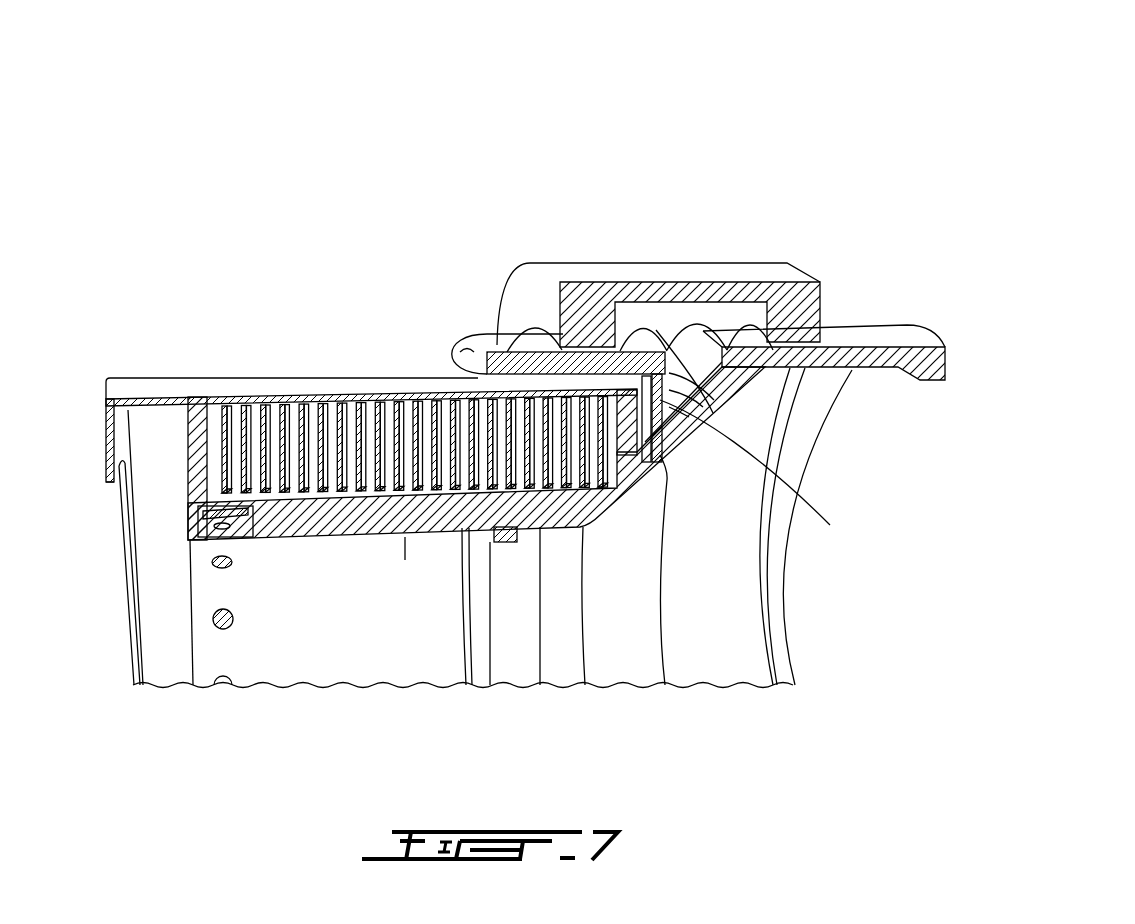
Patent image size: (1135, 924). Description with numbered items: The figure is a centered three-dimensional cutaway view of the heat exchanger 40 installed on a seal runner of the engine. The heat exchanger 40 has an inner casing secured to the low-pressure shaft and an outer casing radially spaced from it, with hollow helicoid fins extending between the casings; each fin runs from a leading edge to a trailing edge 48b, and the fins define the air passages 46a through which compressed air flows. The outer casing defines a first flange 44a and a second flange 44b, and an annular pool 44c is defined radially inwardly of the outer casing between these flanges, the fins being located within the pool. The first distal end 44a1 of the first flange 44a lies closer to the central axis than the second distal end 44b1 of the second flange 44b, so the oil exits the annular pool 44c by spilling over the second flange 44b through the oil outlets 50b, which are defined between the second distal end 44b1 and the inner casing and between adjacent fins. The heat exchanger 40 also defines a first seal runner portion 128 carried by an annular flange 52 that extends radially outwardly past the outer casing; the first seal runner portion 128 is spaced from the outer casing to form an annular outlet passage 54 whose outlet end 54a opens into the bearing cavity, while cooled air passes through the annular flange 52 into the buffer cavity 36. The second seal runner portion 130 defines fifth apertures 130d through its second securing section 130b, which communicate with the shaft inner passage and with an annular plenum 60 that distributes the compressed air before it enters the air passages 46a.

The heat exchanger 40 is at (611, 178).
The first seal runner portion 128 is at (505, 347).
The outlet end 54a is at (465, 348).
The annular outlet passage 54 is at (470, 375).
The oil outlets 50b is at (643, 372).
The buffer cavity 36 is at (702, 312).
The annular flange 52 is at (713, 324).
The air passages 46a is at (313, 420).
The first flange 44a is at (108, 436).
The second seal runner portion 130 is at (680, 350).
The trailing edge 48b is at (640, 412).
The second distal end 44b1 is at (640, 455).
The first distal end 44a1 is at (110, 485).
The annular pool 44c is at (153, 464).
The fifth apertures 130d is at (220, 631).
The annular plenum 60 is at (236, 520).
The second securing section 130b is at (408, 532).
The second flange 44b is at (640, 430).